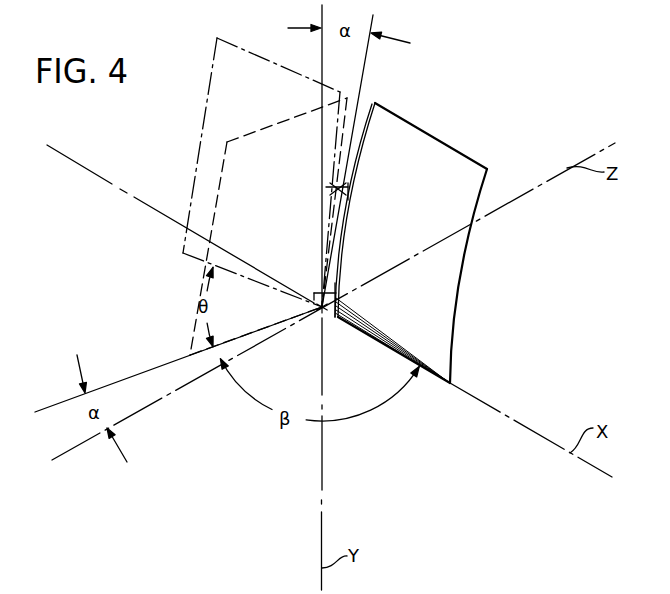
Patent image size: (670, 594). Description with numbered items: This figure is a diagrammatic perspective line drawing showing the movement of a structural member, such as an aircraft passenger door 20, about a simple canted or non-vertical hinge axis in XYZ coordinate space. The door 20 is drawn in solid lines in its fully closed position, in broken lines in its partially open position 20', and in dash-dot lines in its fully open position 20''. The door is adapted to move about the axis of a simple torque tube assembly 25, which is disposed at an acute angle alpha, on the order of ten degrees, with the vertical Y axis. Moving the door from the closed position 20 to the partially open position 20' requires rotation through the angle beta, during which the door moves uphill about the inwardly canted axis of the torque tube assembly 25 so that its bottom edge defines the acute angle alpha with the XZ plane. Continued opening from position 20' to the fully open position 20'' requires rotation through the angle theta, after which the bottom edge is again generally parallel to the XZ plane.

The aircraft door 20 is at (417, 243).
The partially open position of door 20' is at (236, 226).
The fully open position of door 20'' is at (243, 172).
The torque tube assembly 25 is at (346, 200).